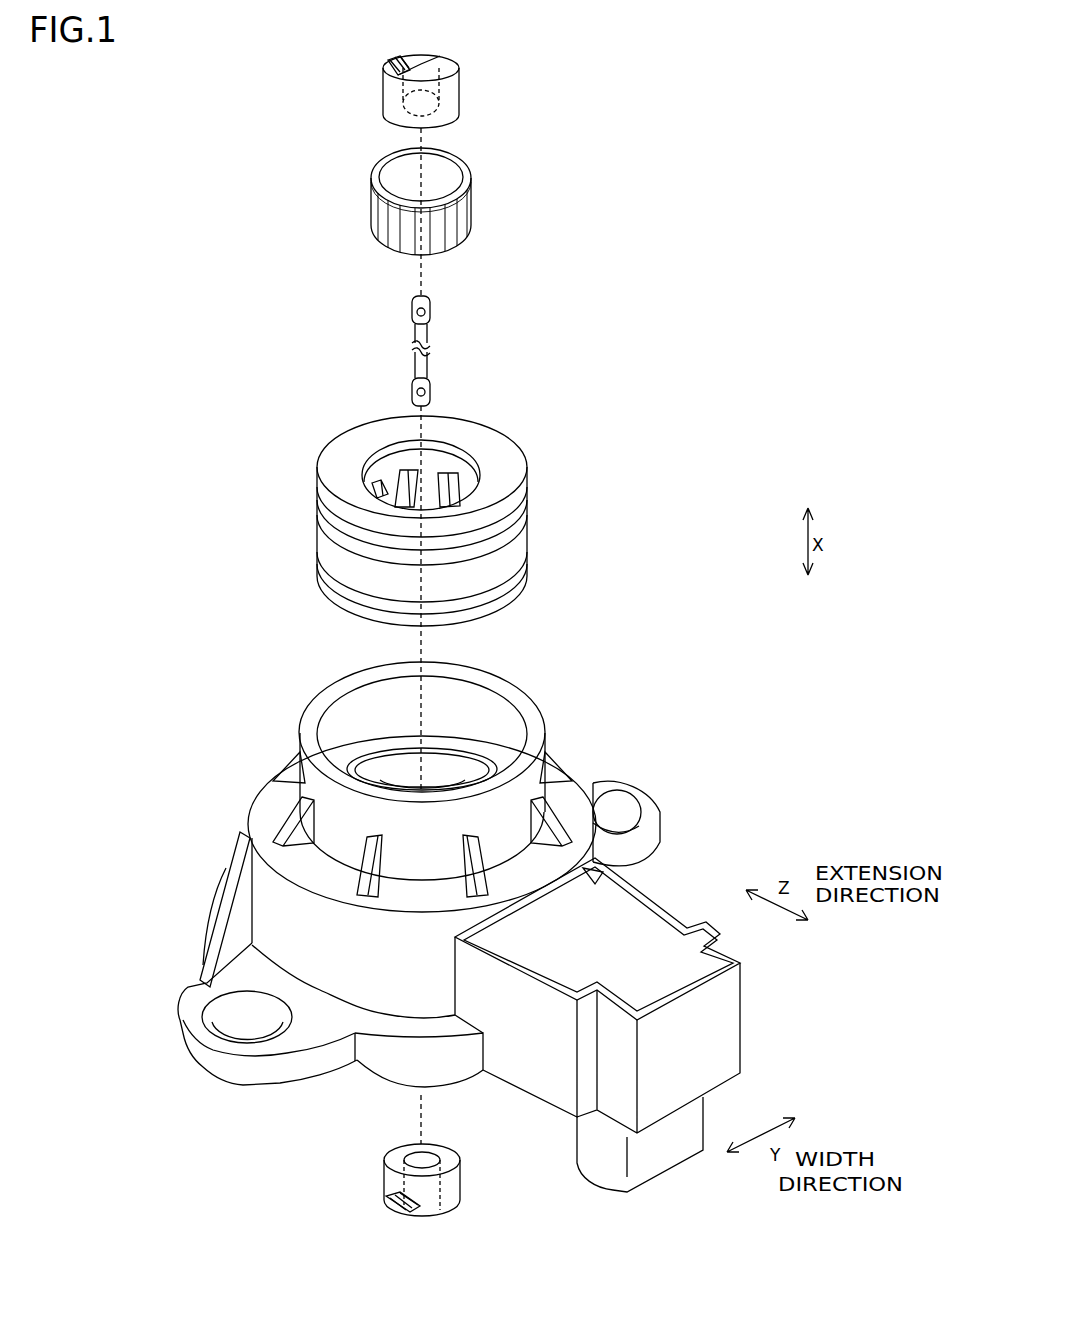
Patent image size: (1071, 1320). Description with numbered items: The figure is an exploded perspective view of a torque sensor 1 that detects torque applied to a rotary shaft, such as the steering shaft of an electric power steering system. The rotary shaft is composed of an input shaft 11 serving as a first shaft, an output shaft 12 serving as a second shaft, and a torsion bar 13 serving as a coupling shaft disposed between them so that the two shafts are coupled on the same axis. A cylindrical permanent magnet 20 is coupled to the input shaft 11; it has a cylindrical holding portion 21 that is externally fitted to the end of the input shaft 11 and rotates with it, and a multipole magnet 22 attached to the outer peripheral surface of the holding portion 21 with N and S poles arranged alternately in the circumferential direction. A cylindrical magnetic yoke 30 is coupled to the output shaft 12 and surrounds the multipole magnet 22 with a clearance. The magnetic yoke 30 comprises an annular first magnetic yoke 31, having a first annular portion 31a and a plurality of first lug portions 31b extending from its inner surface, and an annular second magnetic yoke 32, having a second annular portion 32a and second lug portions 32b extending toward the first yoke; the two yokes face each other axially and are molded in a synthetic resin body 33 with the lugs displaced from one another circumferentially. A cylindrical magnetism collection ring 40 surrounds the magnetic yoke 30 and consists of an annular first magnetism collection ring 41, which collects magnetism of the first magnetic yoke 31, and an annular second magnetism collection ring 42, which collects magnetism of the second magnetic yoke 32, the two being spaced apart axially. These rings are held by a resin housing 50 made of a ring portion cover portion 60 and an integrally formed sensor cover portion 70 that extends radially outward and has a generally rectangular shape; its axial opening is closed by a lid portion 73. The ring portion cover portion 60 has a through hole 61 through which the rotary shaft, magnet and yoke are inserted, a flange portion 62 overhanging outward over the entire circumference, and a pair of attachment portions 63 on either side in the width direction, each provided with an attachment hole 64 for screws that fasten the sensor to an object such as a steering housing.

The torque sensor 1 is at (680, 316).
The input shaft 11 is at (462, 92).
The output shaft 12 is at (462, 1195).
The torsion bar 13 is at (428, 368).
The permanent magnet 20 is at (471, 201).
The holding portion 21 is at (472, 170).
The multipole magnet 22 is at (472, 198).
The magnetic yoke 30 is at (365, 521).
The first magnetic yoke 31 is at (342, 472).
The first annular portion 31a is at (402, 463).
The first lug portions 31b is at (377, 490).
The second magnetic yoke 32 is at (332, 521).
The second annular portion 32a is at (318, 572).
The second lug portions 32b is at (415, 510).
The synthetic resin body 33 is at (528, 538).
The magnetism collection ring 40 is at (422, 734).
The first magnetism collection ring 41 is at (440, 760).
The second magnetism collection ring 42 is at (402, 785).
The housing 50 is at (656, 730).
The ring portion cover portion 60 is at (409, 884).
The through hole 61 is at (352, 706).
The flange portion 62 is at (384, 1030).
The attachment portions 63 is at (190, 988).
The attachment holes 64 is at (232, 1040).
The sensor cover portion 70 is at (602, 987).
The lid portion 73 is at (679, 920).